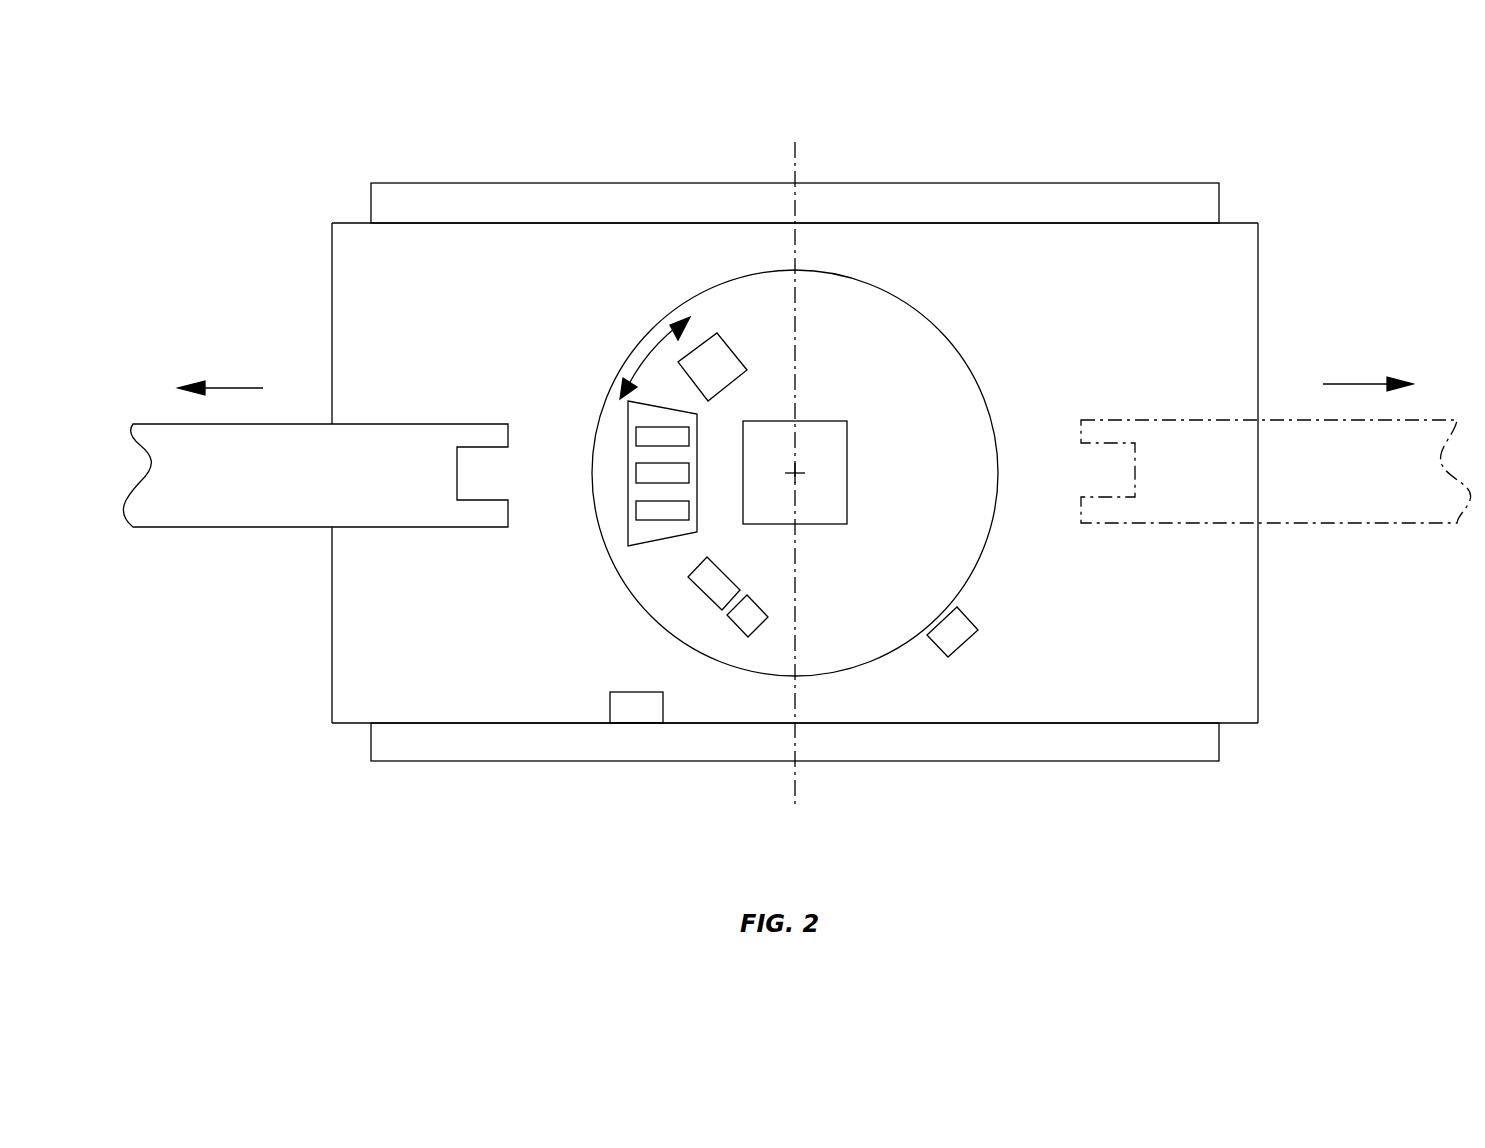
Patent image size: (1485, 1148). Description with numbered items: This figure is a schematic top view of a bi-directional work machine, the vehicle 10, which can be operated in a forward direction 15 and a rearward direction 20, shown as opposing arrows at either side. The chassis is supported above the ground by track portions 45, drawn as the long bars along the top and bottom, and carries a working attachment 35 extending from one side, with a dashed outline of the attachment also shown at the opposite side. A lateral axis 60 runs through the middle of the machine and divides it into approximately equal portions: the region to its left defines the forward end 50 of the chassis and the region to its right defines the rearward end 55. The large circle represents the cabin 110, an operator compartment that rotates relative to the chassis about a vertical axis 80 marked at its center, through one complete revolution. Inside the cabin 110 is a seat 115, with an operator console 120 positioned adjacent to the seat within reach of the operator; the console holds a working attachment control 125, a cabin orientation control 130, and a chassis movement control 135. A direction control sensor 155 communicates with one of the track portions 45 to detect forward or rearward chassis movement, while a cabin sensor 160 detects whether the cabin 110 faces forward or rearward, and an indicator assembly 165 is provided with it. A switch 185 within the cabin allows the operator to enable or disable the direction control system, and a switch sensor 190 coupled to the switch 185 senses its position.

The vehicle 10 is at (976, 118).
The forward direction 15 is at (225, 388).
The rearward direction 20 is at (1360, 384).
The working attachment 35 is at (215, 512).
The track portions 45 is at (1219, 200).
The forward end 50 is at (332, 612).
The rearward end 55 is at (1259, 598).
The axis 60 is at (790, 202).
The vertical axis 80 is at (797, 474).
The cabin 110 is at (930, 320).
The seat 115 is at (817, 418).
The operator console 120 is at (645, 545).
The working attachment control 125 is at (645, 437).
The cabin orientation control 130 is at (645, 477).
The chassis movement control 135 is at (645, 512).
The direction control sensor 155 is at (610, 707).
The cabin sensor 160 is at (963, 645).
The indicator assembly 165 is at (733, 340).
The switch 185 is at (707, 597).
The switch sensor 190 is at (738, 625).